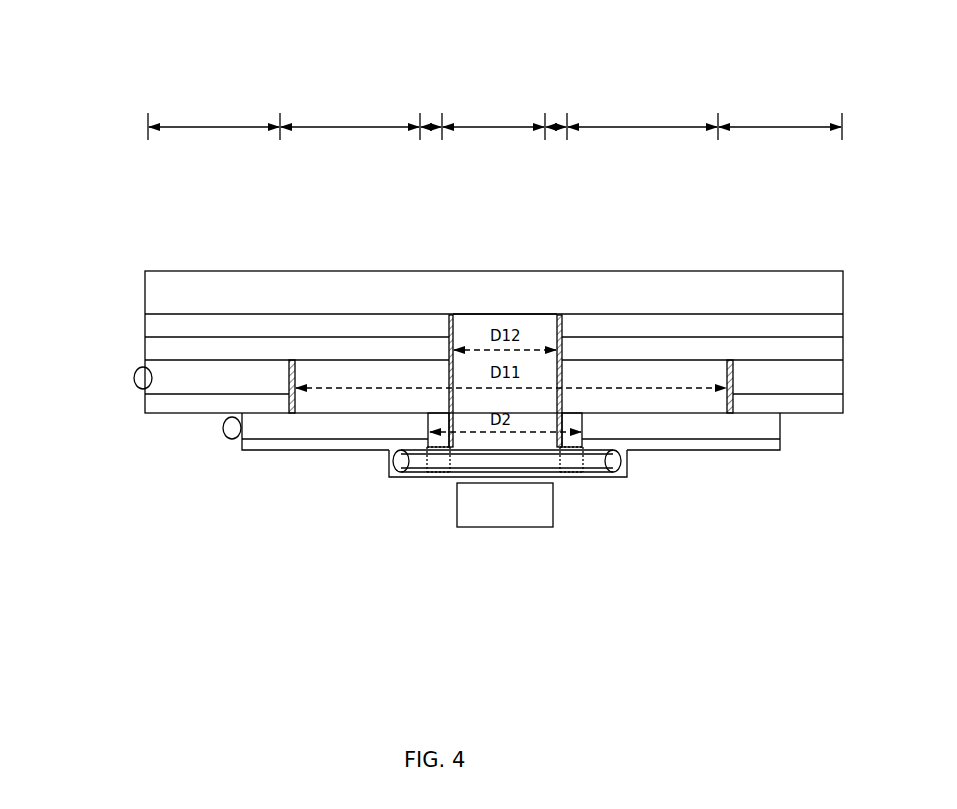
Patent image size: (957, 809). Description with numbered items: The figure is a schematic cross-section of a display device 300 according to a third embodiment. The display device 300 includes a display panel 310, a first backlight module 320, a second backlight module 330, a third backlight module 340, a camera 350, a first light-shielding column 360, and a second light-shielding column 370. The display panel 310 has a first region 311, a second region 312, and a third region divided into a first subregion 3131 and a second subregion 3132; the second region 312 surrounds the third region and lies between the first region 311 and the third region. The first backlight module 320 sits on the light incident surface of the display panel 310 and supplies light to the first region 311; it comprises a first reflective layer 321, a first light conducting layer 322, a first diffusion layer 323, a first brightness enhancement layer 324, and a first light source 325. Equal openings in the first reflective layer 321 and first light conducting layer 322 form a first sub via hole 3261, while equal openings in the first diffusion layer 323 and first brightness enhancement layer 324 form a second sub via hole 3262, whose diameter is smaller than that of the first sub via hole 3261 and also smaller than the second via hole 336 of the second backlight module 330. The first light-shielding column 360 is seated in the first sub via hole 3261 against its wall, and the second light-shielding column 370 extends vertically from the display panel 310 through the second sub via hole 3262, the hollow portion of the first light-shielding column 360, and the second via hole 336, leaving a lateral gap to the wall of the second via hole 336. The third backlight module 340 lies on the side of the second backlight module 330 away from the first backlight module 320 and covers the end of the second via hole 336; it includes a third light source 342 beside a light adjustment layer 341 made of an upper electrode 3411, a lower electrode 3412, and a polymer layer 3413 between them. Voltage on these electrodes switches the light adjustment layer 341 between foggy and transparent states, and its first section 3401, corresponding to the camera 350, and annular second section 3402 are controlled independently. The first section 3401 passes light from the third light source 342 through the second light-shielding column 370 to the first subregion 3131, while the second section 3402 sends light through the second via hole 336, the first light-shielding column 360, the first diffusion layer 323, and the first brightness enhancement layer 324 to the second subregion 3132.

The display device 300 is at (170, 36).
The display panel 310 is at (843, 300).
The first region 311 is at (495, 115).
The second region 312 is at (499, 115).
The first subregion 3131 is at (493, 110).
The second subregion 3132 is at (490, 110).
The first backlight module 320 is at (428, 368).
The first reflective layer 321 is at (455, 411).
The first light conducting layer 322 is at (157, 366).
The first diffusion layer 323 is at (147, 351).
The first brightness enhancement layer 324 is at (147, 331).
The first light source 325 is at (134, 386).
The first sub via hole 3261 is at (287, 377).
The second sub via hole 3262 is at (446, 324).
The second backlight module 330 is at (242, 446).
The second via hole 336 is at (585, 421).
The third backlight module 340 is at (449, 506).
The light adjustment layer 341 is at (471, 506).
The upper electrode 3411 is at (462, 451).
The lower electrode 3412 is at (463, 472).
The polymer layer 3413 is at (458, 461).
The first section 3401 is at (550, 460).
The second section 3402 is at (572, 461).
The third light source 342 is at (392, 456).
The camera 350 is at (510, 527).
The first light-shielding column 360 is at (628, 358).
The second light-shielding column 370 is at (510, 314).